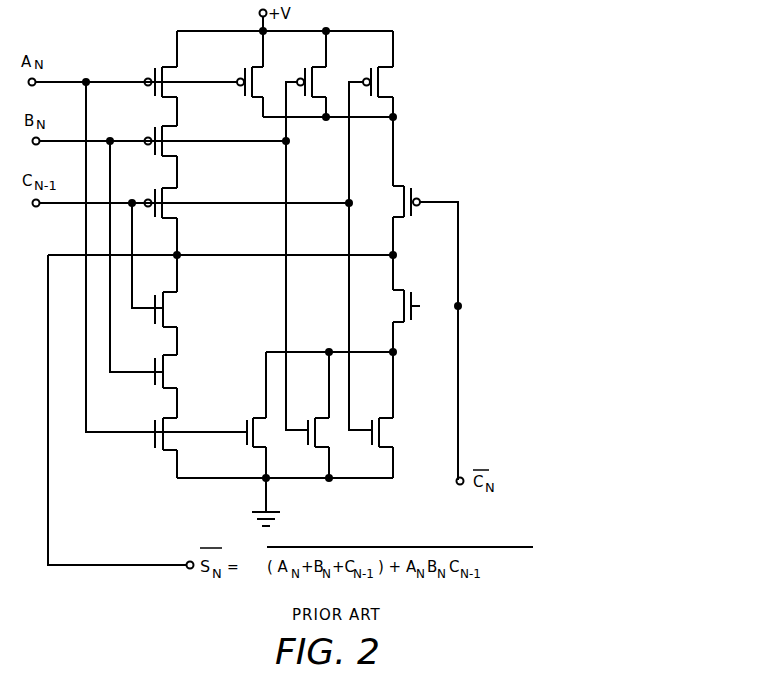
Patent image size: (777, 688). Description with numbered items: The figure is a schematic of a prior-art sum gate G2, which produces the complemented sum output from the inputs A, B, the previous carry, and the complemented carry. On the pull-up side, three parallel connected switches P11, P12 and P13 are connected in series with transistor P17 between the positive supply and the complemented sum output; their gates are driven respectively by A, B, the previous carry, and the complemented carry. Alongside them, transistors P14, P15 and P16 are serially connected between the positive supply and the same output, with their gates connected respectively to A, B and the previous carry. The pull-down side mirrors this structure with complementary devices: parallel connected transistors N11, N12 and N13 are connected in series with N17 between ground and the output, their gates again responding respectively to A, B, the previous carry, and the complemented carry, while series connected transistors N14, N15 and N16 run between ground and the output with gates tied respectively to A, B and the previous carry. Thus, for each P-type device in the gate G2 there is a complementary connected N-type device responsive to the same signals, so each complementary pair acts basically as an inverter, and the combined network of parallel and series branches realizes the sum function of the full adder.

The sum gate G2 is at (441, 119).
The switch P11 is at (245, 70).
The switch P12 is at (305, 70).
The switch P13 is at (391, 82).
The transistor P14 is at (179, 91).
The transistor P15 is at (179, 153).
The transistor P16 is at (181, 213).
The transistor P17 is at (391, 200).
The transistor N11 is at (248, 417).
The transistor N12 is at (308, 443).
The transistor N13 is at (370, 443).
The transistor N14 is at (185, 441).
The transistor N15 is at (181, 372).
The transistor N16 is at (180, 309).
The transistor N17 is at (392, 306).